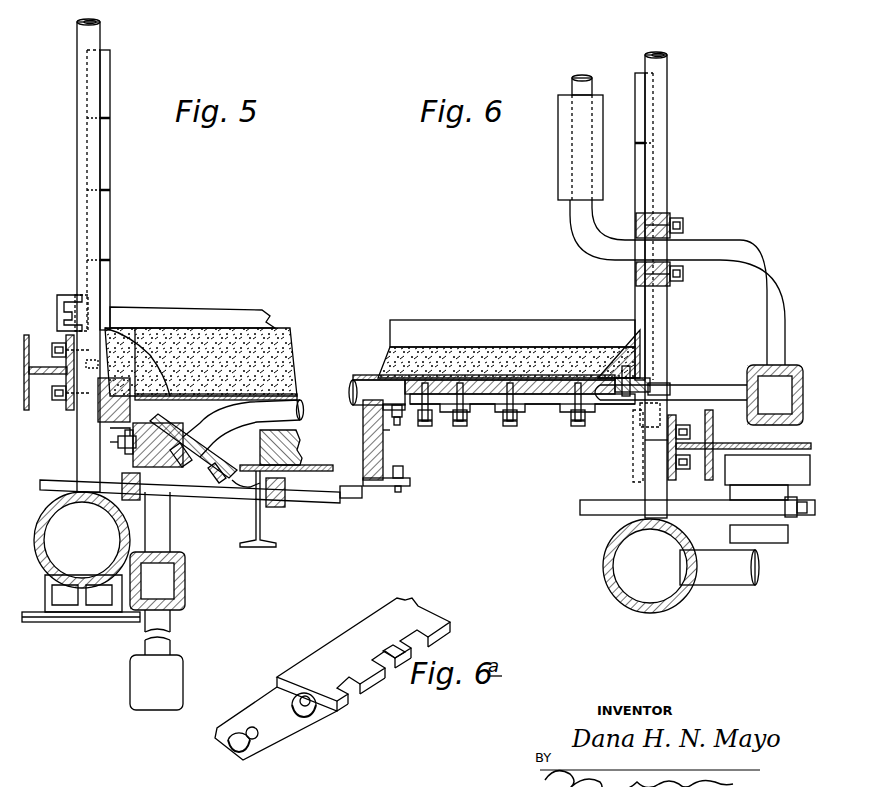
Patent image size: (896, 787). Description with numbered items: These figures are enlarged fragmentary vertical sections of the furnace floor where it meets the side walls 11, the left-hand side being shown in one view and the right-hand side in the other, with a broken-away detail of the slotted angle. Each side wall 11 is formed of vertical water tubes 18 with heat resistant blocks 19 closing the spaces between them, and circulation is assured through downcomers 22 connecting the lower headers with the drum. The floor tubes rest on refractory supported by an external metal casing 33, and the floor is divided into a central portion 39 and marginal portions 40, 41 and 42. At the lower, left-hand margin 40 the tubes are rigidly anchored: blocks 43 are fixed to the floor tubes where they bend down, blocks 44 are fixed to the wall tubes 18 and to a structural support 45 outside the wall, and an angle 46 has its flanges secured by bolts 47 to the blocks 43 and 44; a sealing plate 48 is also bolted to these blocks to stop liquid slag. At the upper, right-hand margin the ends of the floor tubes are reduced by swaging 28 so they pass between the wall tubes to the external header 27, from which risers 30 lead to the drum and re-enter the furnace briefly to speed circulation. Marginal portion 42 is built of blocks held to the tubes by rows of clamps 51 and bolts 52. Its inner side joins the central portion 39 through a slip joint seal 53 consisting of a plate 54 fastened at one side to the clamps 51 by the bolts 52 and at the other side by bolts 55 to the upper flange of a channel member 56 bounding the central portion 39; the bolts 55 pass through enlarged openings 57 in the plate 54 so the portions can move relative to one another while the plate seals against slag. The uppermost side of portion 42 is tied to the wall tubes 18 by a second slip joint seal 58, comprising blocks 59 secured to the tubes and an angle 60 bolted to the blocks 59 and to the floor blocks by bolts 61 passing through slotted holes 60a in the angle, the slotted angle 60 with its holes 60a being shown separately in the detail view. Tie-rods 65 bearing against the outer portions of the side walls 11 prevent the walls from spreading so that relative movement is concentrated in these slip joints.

In FIG. 5, the side wall 11 is at (112, 66).
In FIG. 6, the side wall 11 is at (635, 78).
In FIG. 5, the water tube 18 is at (77, 45).
In FIG. 6, the water tube 18 is at (668, 68).
In FIG. 5, the heat resistant block 19 is at (110, 170).
In FIG. 6, the heat resistant block 19 is at (596, 137).
In FIG. 6, the downcomer 22 is at (725, 585).
In FIG. 6, the header 27 is at (757, 365).
In FIG. 6, the swaging 28 is at (722, 385).
In FIG. 6, the riser 30 is at (750, 245).
In FIG. 6, the external metal casing 33 is at (380, 486).
In FIG. 5, the central portion 39 is at (288, 328).
In FIG. 6, the central portion 39 is at (385, 330).
In FIG. 5, the marginal portion 40 is at (160, 330).
In FIG. 6, the marginal portion 41 is at (615, 345).
In FIG. 6, the marginal portion 42 is at (535, 347).
In FIG. 5, the block 43 is at (150, 458).
In FIG. 5, the block 44 is at (130, 378).
In FIG. 5, the structural support 45 is at (33, 334).
In FIG. 5, the angle 46 is at (118, 442).
In FIG. 5, the bolt 47 is at (135, 447).
In FIG. 5, the sealing plate 48 is at (212, 330).
In FIG. 6, the clamp 51 is at (573, 418).
In FIG. 6, the bolt 52 is at (515, 422).
In FIG. 6, the slip joint seal 53 is at (420, 420).
In FIG. 6, the plate 54 is at (448, 421).
In FIG. 6, the bolt 55 is at (396, 418).
In FIG. 6, the channel member 56 is at (363, 443).
In FIG. 6, the enlarged opening 57 is at (408, 393).
In FIG. 6, the slip joint seal 58 is at (603, 352).
In FIG. 6, the block 59 is at (628, 320).
In FIG. 6, the angle 60 is at (633, 396).
In FIG. 6A, the angle 60 is at (360, 632).
In FIG. 6A, the slotted hole 60a is at (418, 630).
In FIG. 6, the bolt 61 is at (660, 392).
In FIG. 5, the tie-rod 65 is at (233, 494).
In FIG. 6, the tie-rod 65 is at (581, 515).